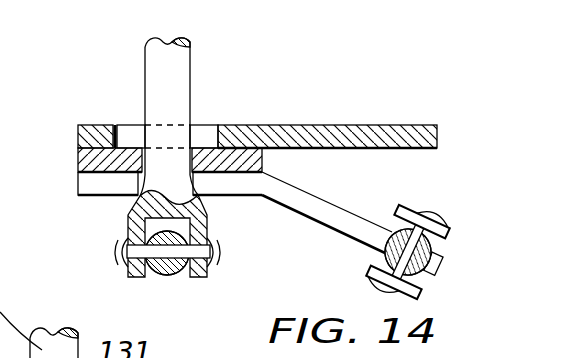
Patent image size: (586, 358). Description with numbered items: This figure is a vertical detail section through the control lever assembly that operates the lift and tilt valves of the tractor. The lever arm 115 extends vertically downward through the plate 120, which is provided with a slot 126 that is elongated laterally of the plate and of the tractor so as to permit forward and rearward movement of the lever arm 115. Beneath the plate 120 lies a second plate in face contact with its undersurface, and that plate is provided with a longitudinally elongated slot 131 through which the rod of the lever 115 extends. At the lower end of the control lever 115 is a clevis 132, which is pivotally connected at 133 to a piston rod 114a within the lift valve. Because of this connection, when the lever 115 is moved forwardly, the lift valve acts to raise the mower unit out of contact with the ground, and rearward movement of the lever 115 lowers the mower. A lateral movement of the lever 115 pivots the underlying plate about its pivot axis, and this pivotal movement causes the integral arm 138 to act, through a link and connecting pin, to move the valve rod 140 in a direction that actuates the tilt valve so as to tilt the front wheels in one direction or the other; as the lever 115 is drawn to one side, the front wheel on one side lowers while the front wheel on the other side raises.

The lever arm 115 is at (165, 57).
The longitudinally elongated slot 131 is at (130, 147).
The slot 126 is at (203, 132).
The plate 120 is at (308, 123).
The clevis 132 is at (135, 232).
The pivotal connection 133 is at (195, 250).
The piston rod 114a is at (170, 272).
The integral arm 138 is at (335, 218).
The valve rod 140 is at (438, 267).